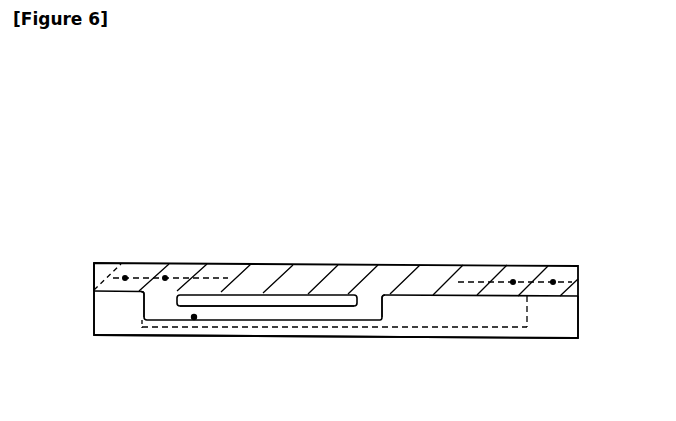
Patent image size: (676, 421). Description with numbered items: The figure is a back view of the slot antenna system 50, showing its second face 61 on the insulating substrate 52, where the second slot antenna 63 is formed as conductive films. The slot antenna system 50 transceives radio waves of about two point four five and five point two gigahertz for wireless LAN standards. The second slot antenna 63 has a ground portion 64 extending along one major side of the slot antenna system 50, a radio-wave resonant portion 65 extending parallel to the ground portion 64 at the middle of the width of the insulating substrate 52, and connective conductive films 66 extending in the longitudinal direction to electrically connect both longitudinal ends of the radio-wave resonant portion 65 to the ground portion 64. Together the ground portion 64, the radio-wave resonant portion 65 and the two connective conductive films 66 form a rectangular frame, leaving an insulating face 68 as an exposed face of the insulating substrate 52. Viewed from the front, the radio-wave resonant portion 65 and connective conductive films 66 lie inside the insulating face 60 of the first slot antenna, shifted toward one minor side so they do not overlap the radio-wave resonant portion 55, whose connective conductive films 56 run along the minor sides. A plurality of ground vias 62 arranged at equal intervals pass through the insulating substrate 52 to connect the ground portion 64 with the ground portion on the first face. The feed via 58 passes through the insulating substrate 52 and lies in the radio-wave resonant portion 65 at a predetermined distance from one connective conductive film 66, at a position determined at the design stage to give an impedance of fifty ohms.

The slot antenna system 50 is at (325, 203).
The insulating substrate 52 is at (548, 327).
The radio-wave resonant portion 55 is at (356, 330).
The connective conductive films 56 is at (122, 304).
The feed via 58 is at (194, 318).
The insulating face 60 is at (474, 315).
The second face 61 is at (500, 265).
The ground vias 62 is at (125, 278).
The second slot antenna 63 is at (93, 293).
The ground portion 64 is at (431, 278).
The radio-wave resonant portion 65 is at (318, 311).
The connective conductive film 66 is at (143, 296).
The insulating face 68 is at (256, 309).